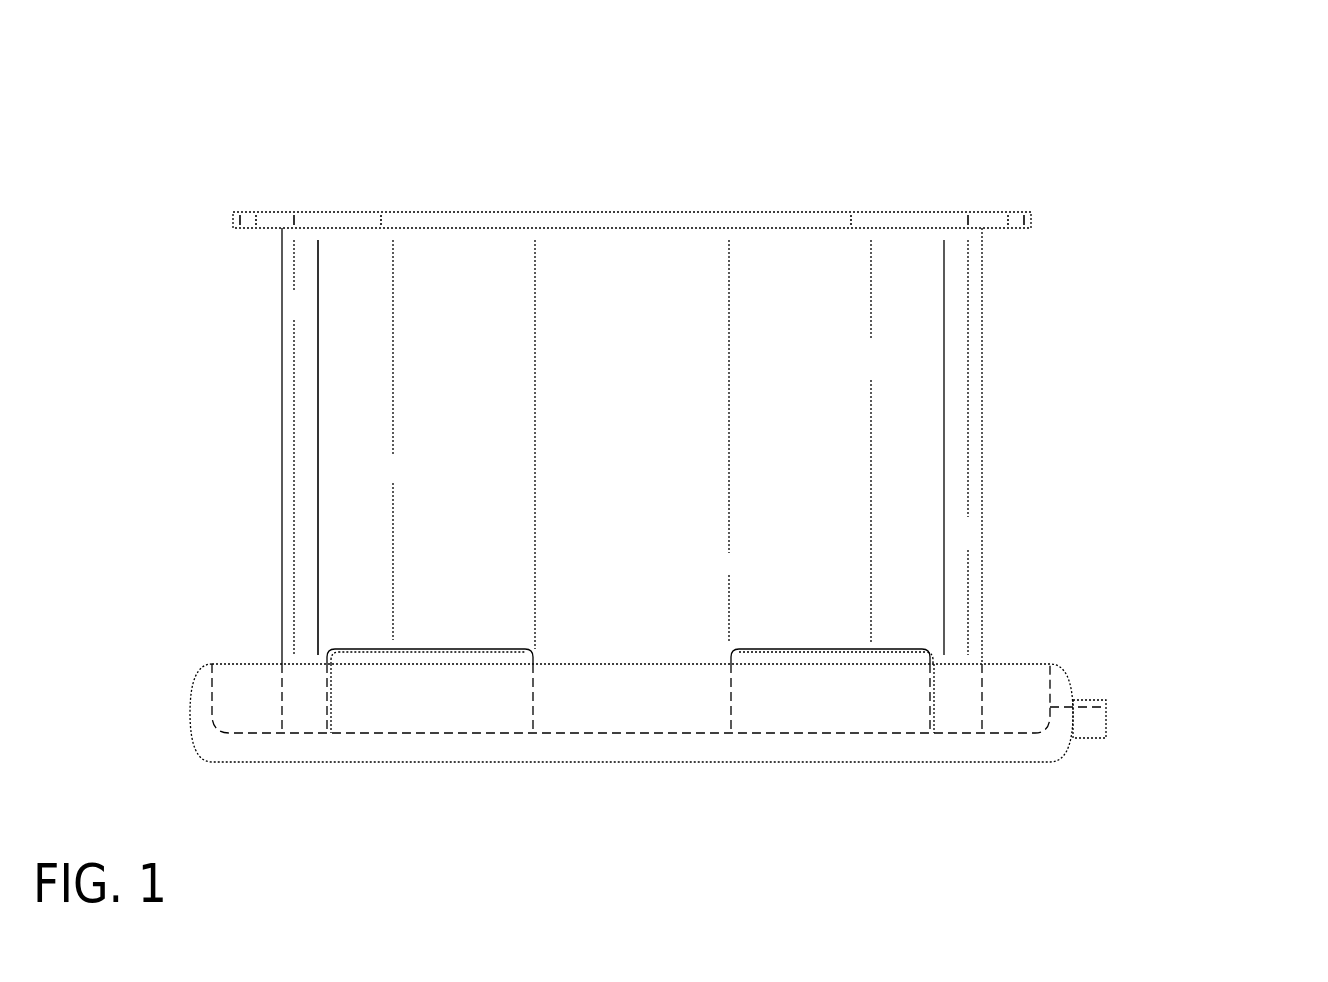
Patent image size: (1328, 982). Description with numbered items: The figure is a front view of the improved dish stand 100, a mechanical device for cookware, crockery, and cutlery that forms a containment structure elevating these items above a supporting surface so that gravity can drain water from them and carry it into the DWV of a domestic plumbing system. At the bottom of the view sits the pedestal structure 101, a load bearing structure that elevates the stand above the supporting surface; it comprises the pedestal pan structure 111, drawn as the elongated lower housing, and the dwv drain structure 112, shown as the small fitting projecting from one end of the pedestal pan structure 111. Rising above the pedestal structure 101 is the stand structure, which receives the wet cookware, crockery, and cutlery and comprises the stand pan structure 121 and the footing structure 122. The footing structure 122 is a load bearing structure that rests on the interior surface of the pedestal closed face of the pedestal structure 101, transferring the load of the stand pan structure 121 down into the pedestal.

The improved dish stand 100 is at (118, 138).
The pedestal structure 101 is at (1124, 375).
The pedestal pan structure 111 is at (1030, 750).
The dwv drain structure 112 is at (1097, 720).
The stand pan structure 121 is at (930, 425).
The footing structure 122 is at (668, 688).